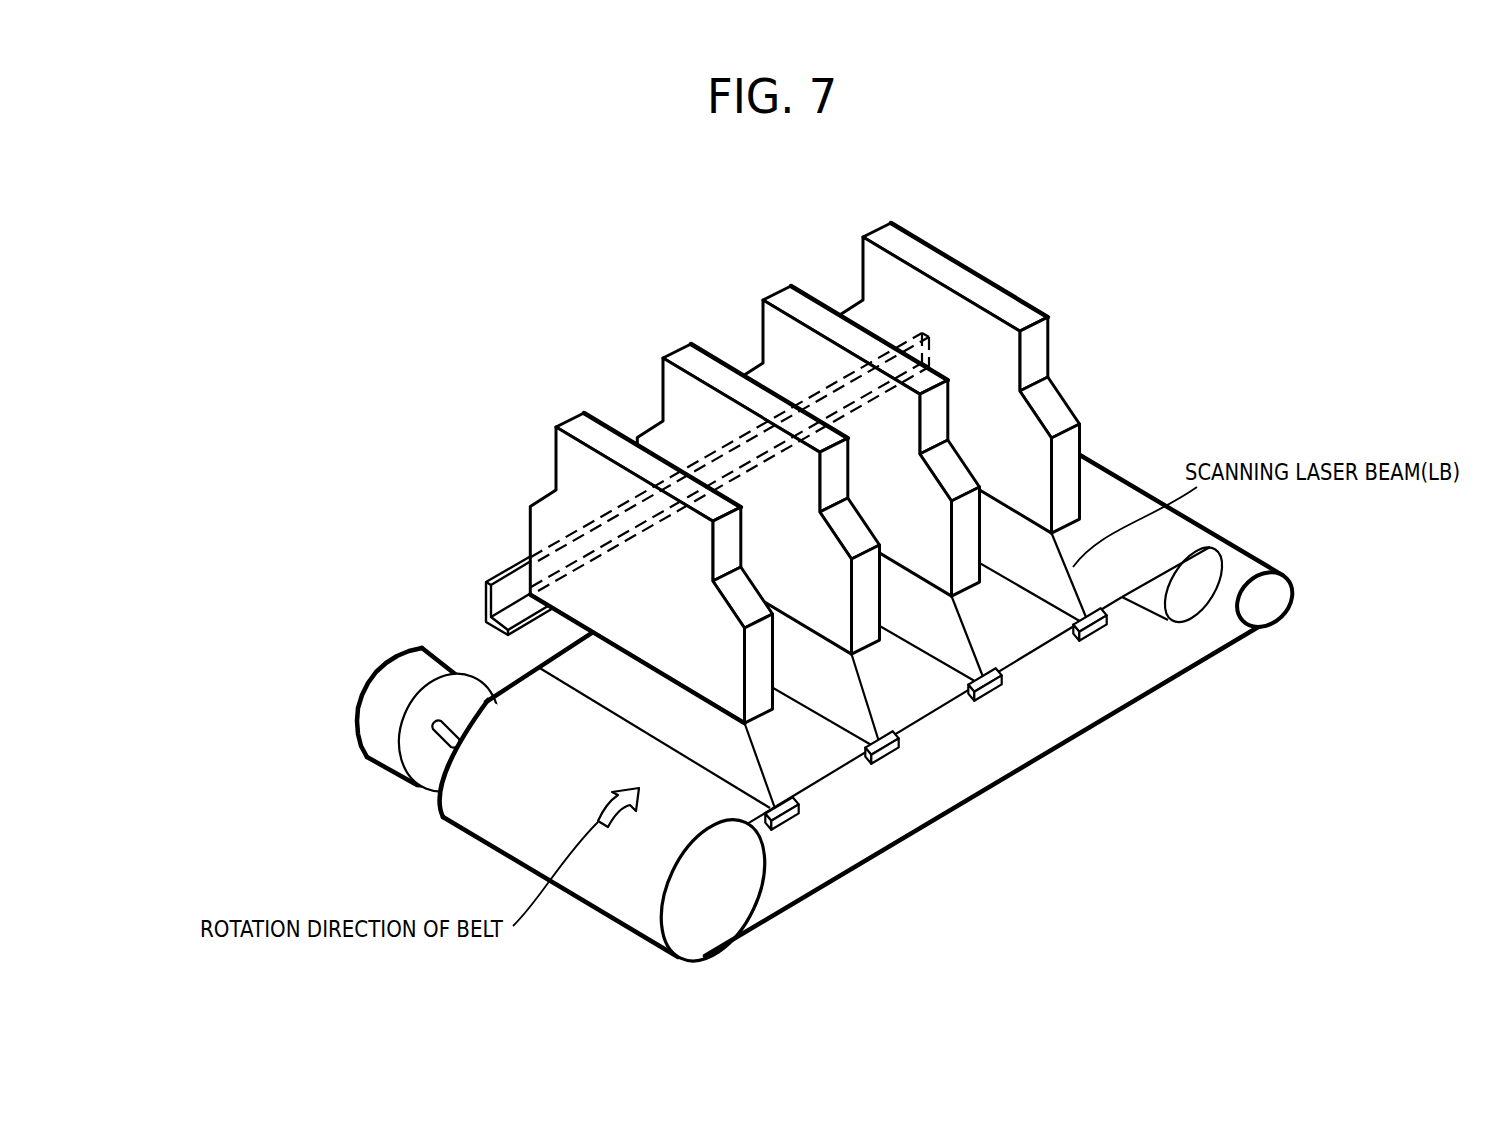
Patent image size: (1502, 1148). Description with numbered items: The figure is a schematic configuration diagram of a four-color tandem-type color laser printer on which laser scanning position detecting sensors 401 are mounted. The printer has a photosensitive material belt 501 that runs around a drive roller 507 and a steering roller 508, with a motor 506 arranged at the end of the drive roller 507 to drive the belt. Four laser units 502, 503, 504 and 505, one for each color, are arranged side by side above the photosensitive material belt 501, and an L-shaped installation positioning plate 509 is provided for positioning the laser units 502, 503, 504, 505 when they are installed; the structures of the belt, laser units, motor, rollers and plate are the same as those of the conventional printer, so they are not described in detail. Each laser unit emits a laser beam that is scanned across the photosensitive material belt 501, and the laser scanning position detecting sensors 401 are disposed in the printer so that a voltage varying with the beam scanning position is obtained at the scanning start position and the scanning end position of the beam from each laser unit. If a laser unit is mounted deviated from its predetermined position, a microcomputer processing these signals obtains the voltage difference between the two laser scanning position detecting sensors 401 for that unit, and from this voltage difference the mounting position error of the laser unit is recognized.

The laser scanning position detecting sensor 401 is at (1100, 640).
The photosensitive material belt 501 is at (1104, 498).
The laser unit 502 is at (862, 236).
The laser unit 503 is at (765, 298).
The laser unit 504 is at (665, 357).
The laser unit 505 is at (558, 426).
The motor 506 is at (390, 678).
The drive roller 507 is at (735, 869).
The steering roller 508 is at (1267, 616).
The L-shaped installation positioning plate 509 is at (498, 575).